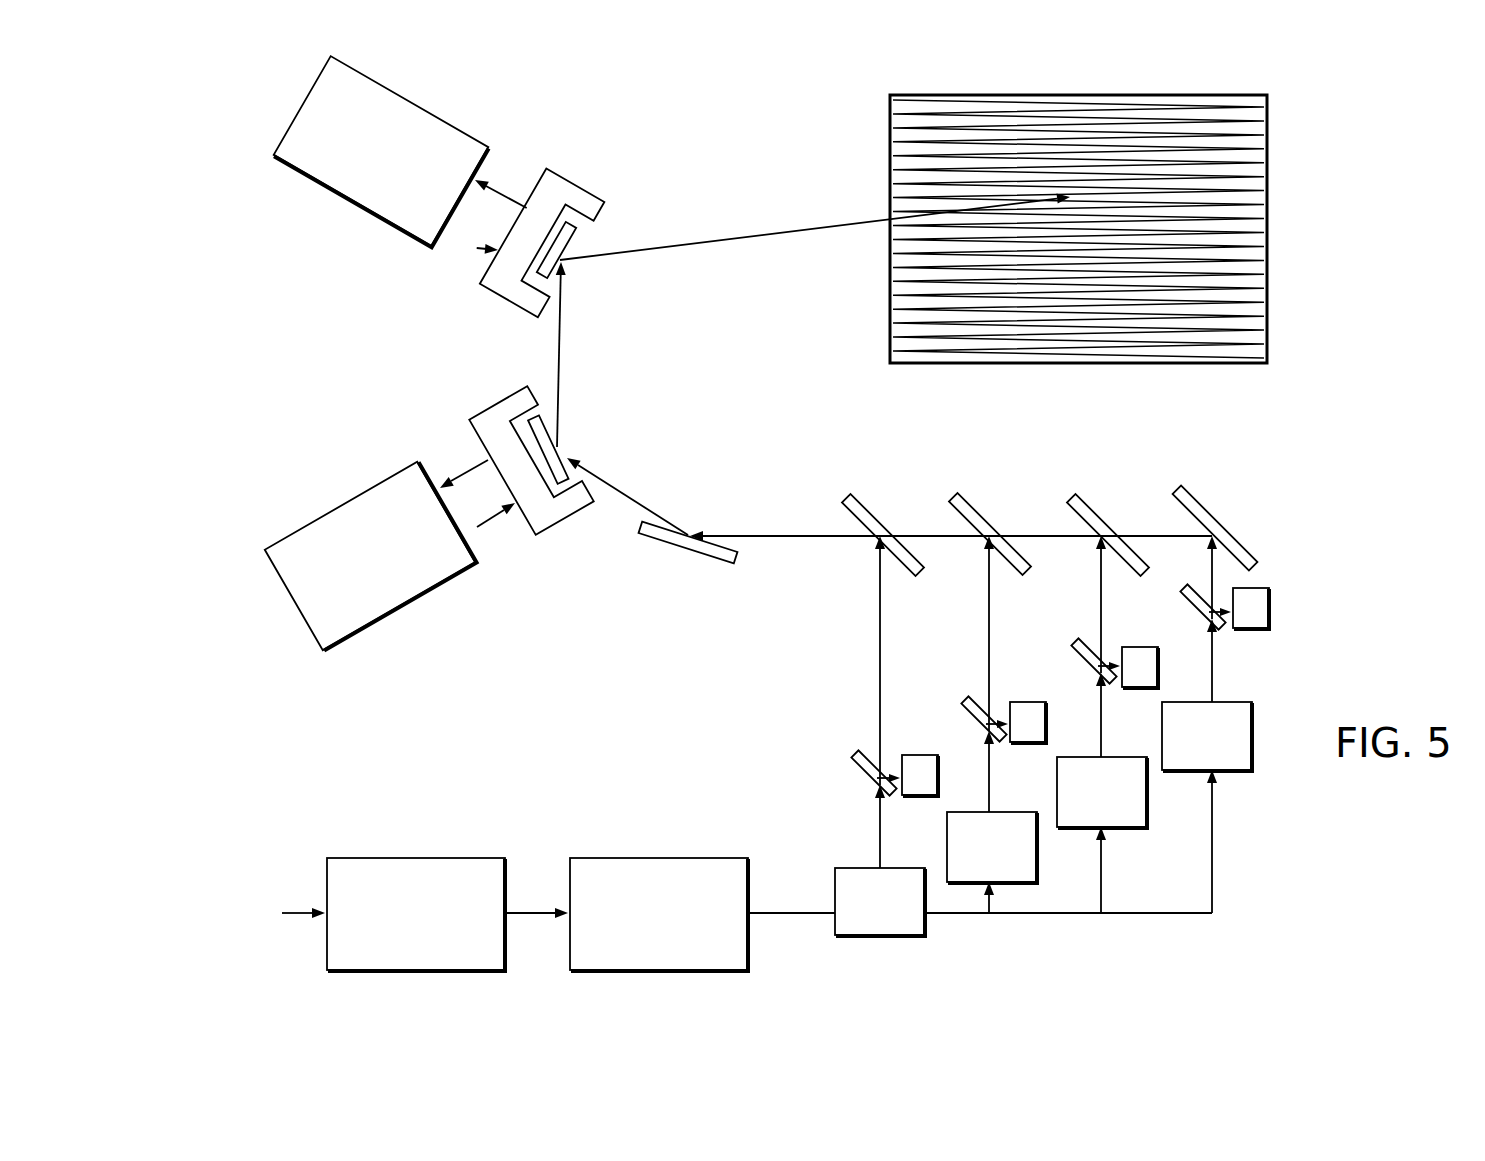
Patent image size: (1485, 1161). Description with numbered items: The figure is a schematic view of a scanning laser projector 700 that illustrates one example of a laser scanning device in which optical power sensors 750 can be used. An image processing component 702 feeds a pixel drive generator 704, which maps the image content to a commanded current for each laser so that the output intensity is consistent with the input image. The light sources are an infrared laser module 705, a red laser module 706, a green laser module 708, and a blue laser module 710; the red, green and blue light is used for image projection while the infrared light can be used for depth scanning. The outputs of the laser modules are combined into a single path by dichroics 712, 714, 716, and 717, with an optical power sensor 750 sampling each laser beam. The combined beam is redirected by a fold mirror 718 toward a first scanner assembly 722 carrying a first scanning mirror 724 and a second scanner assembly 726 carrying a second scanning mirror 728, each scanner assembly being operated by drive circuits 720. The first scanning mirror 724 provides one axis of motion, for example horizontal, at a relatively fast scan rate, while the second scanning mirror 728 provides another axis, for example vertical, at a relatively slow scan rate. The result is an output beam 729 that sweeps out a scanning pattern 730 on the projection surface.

The scanning laser projector 700 is at (172, 897).
The image processing component 702 is at (410, 857).
The pixel drive generator 704 is at (655, 857).
The infrared laser module 705 is at (833, 866).
The red laser module 706 is at (973, 812).
The green laser module 708 is at (1148, 829).
The blue laser module 710 is at (1253, 752).
The dichroic 712 is at (1193, 495).
The dichroic 714 is at (1085, 498).
The dichroic 716 is at (967, 497).
The dichroic 717 is at (862, 495).
The fold mirror 718 is at (700, 563).
The drive circuits 720 is at (280, 138).
The first scanner assembly 722 is at (472, 409).
The first scanning mirror 724 is at (558, 446).
The second scanner assembly 726 is at (480, 277).
The second scanning mirror 728 is at (578, 232).
The output beam 729 is at (820, 228).
The scanning pattern 730 is at (1267, 338).
The optical power sensors 750 is at (838, 761).